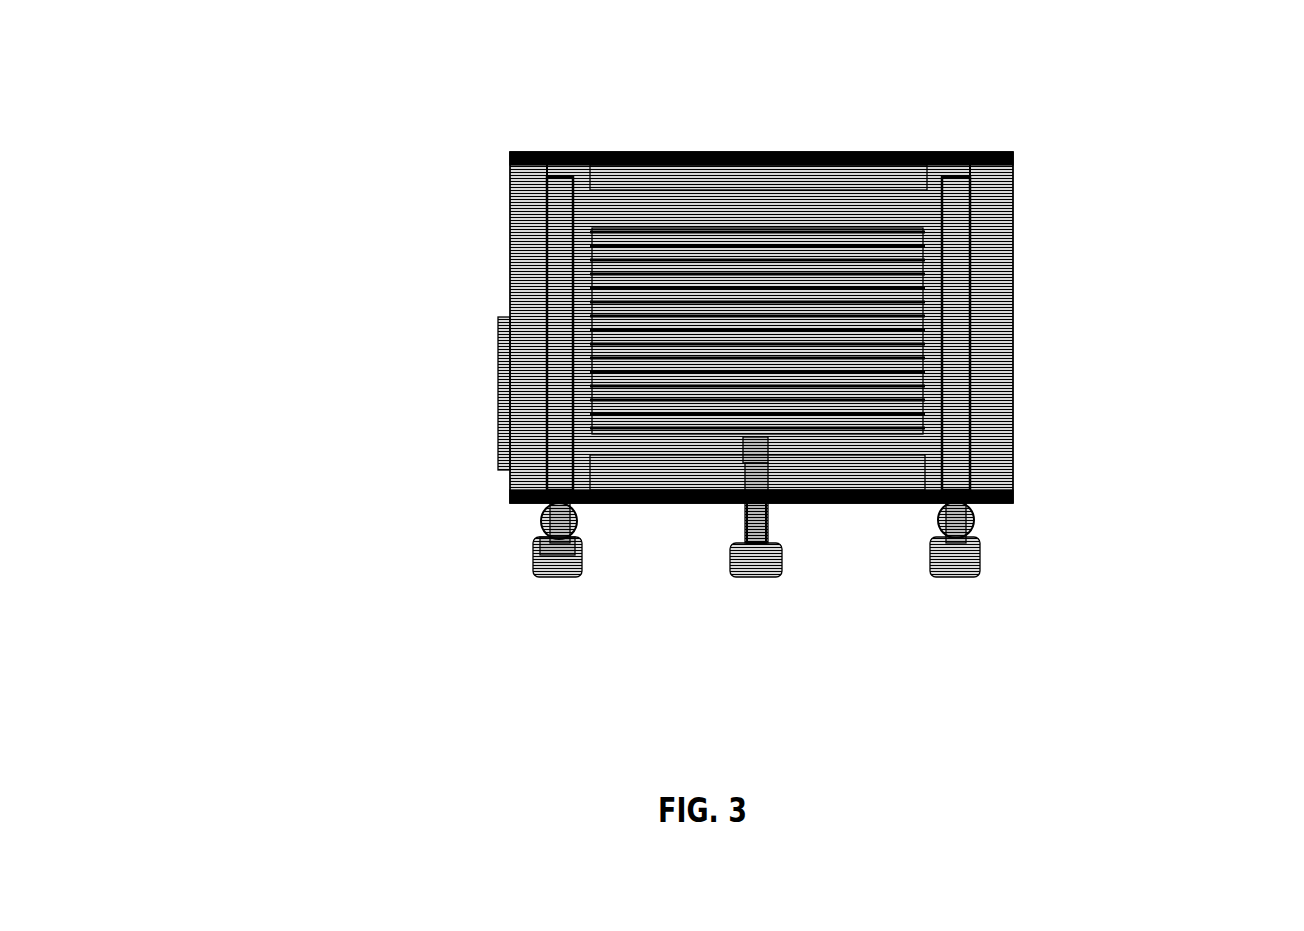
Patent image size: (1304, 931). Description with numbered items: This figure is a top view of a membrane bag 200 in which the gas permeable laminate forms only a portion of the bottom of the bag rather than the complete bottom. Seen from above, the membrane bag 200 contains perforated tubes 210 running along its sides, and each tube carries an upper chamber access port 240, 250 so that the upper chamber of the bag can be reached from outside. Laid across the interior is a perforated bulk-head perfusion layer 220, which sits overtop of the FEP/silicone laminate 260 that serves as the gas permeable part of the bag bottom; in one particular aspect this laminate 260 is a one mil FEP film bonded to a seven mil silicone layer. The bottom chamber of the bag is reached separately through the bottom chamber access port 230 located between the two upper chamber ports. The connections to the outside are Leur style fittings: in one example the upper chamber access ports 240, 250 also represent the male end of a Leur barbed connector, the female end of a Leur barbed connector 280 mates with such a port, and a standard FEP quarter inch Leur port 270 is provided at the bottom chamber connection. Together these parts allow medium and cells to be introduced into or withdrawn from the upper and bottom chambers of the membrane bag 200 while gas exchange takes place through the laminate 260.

The membrane bag 200 is at (357, 138).
The perforated tubes 210 is at (957, 280).
The perforated bulk-head perfusion layer 220 is at (897, 331).
The bottom chamber access port 230 is at (757, 573).
The upper chamber access port 240 is at (553, 570).
The upper chamber access port 250 is at (962, 578).
The FEP/silicone laminate 260 is at (633, 363).
The Leur port 270 is at (755, 512).
The female end of Leur barbed connector 280 is at (570, 545).